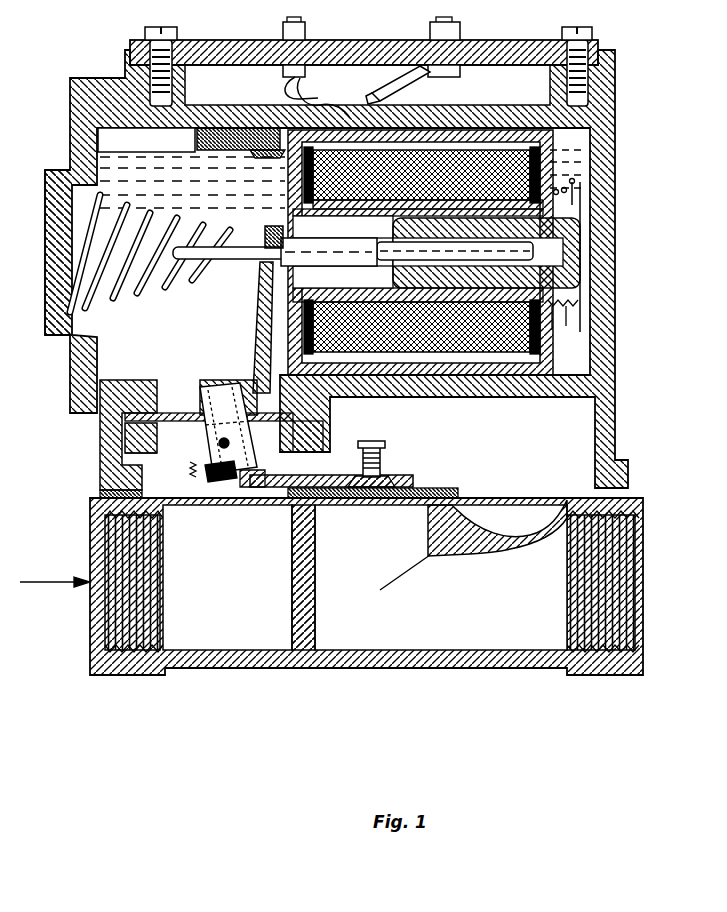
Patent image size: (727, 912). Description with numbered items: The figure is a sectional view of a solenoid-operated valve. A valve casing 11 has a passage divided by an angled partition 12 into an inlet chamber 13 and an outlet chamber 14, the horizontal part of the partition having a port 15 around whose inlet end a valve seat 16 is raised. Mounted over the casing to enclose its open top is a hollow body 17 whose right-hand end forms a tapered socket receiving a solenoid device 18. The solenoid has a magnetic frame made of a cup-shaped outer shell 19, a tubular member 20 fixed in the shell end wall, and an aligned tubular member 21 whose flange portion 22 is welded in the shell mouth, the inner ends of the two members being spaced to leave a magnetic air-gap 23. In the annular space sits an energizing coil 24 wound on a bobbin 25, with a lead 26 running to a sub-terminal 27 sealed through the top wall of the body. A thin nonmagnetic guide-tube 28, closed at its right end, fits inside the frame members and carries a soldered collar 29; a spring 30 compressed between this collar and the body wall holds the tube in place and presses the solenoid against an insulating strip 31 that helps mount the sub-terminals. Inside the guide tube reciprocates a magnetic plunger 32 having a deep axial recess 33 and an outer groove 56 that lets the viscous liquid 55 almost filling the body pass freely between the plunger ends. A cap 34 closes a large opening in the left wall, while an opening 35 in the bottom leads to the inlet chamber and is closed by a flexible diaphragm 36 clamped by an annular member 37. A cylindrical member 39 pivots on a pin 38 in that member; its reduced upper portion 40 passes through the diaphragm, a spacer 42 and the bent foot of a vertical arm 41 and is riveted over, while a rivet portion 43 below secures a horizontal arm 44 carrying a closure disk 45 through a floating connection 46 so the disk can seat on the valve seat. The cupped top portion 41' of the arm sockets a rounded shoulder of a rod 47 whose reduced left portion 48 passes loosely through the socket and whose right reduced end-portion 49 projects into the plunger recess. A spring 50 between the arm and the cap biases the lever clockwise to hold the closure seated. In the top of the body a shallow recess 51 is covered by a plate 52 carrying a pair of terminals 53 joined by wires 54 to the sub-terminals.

The valve casing 11 is at (480, 664).
The angled partition 12 is at (317, 582).
The inlet chamber 13 is at (205, 589).
The outlet chamber 14 is at (495, 617).
The port 15 is at (370, 520).
The valve seat 16 is at (450, 500).
The hollow body 17 is at (606, 360).
The solenoid device 18 is at (564, 144).
The cup-shaped outer shell 19 is at (497, 382).
The tubular member 20 is at (490, 302).
The tubular member 21 is at (384, 294).
The flange portion 22 is at (320, 322).
The magnetic air-gap 23 is at (443, 290).
The energizing coil 24 is at (438, 380).
The bobbin 25 is at (412, 302).
The lead 26 is at (262, 154).
The sub-terminal 27 is at (198, 140).
The guide-tube 28 is at (425, 200).
The collar 29 is at (562, 306).
The spring 30 is at (580, 305).
The insulating strip 31 is at (300, 105).
The magnetic plunger 32 is at (465, 200).
The axial recess 33 is at (396, 258).
The cap 34 is at (46, 270).
The opening 35 is at (160, 393).
The flexible diaphragm 36 is at (150, 423).
The annular member 37 is at (148, 446).
The pin 38 is at (230, 444).
The cylindrical member 39 is at (196, 470).
The reduced upper portion 40 is at (233, 390).
The vertical arm 41 is at (246, 327).
The top portion of arm 41' is at (257, 230).
The spacer 42 is at (192, 390).
The rivet portion 43 is at (228, 480).
The horizontal arm 44 is at (282, 488).
The closure disk 45 is at (432, 487).
The floating connection 46 is at (408, 467).
The rod 47 is at (347, 250).
The reduced left portion 48 is at (207, 262).
The right reduced end-portion 49 is at (380, 200).
The spring 50 is at (146, 280).
The shallow recess 51 is at (493, 80).
The plate 52 is at (553, 43).
The terminals 53 is at (305, 27).
The wires 54 is at (370, 80).
The viscous liquid 55 is at (118, 168).
The groove 56 is at (502, 200).